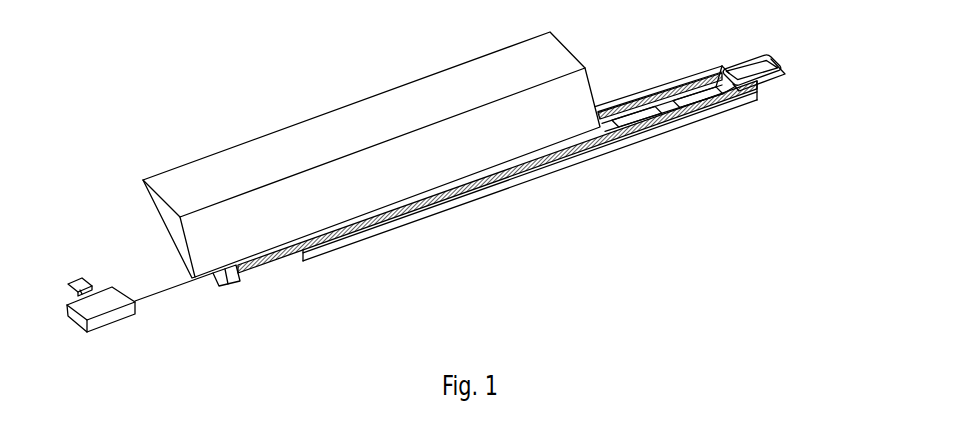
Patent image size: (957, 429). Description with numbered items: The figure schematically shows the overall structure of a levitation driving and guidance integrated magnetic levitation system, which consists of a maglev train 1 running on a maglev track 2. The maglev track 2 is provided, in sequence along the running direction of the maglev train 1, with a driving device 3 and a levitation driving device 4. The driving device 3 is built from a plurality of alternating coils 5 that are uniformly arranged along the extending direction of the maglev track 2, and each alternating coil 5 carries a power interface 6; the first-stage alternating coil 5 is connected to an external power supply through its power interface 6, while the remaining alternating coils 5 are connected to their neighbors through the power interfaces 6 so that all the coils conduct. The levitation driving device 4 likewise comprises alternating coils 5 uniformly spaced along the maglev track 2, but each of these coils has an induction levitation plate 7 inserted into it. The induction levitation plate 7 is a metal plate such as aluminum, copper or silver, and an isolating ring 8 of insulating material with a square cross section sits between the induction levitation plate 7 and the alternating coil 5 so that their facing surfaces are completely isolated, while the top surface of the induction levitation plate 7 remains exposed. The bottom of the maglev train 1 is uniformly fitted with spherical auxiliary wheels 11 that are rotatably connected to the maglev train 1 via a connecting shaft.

The maglev train 1 is at (301, 144).
The maglev track 2 is at (647, 80).
The driving device 3 is at (538, 173).
The levitation driving device 4 is at (726, 54).
The alternating coil 5 is at (786, 53).
The power interface 6 is at (777, 88).
The induction levitation plate 7 is at (762, 71).
The isolating ring 8 is at (712, 71).
The auxiliary wheel 11 is at (397, 225).